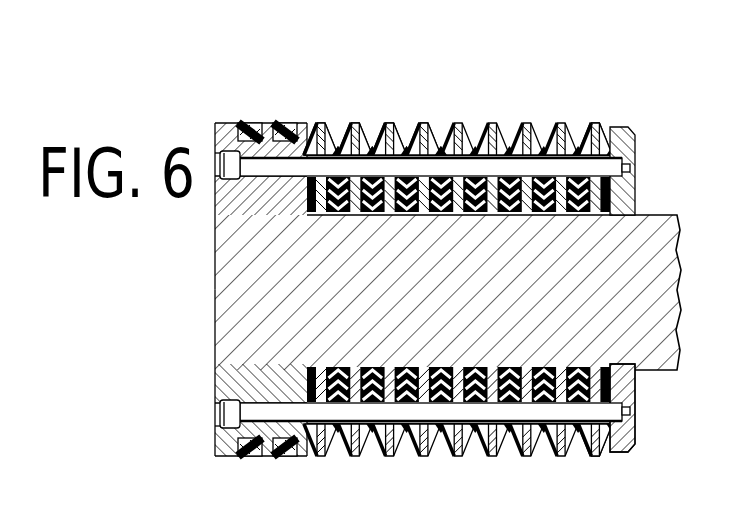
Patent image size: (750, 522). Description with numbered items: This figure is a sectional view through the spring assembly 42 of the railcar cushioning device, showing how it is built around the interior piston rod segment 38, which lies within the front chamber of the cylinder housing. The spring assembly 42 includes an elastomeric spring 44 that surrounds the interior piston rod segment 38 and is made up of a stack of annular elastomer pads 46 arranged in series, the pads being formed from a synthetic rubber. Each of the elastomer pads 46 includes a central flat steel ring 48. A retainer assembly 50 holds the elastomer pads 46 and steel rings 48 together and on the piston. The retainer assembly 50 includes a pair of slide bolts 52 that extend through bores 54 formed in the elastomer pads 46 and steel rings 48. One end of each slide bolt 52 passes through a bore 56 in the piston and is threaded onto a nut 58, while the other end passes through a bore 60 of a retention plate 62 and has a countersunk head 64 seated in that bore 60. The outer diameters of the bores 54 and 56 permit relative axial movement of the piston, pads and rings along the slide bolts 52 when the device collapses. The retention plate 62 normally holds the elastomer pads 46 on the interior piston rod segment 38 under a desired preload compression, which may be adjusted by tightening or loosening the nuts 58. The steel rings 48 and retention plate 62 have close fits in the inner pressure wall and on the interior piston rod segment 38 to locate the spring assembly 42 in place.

The interior piston rod segment 38 is at (663, 368).
The spring assembly 42 is at (493, 462).
The elastomeric spring 44 is at (528, 120).
The elastomer pads 46 is at (322, 145).
The steel ring 48 is at (427, 126).
The retainer assembly 50 is at (625, 121).
The slide bolt 52 is at (301, 160).
The bore 54 is at (456, 160).
The bore 56 is at (280, 158).
The nut 58 is at (221, 153).
The bore 60 is at (610, 158).
The retention plate 62 is at (620, 456).
The countersunk head 64 is at (631, 163).